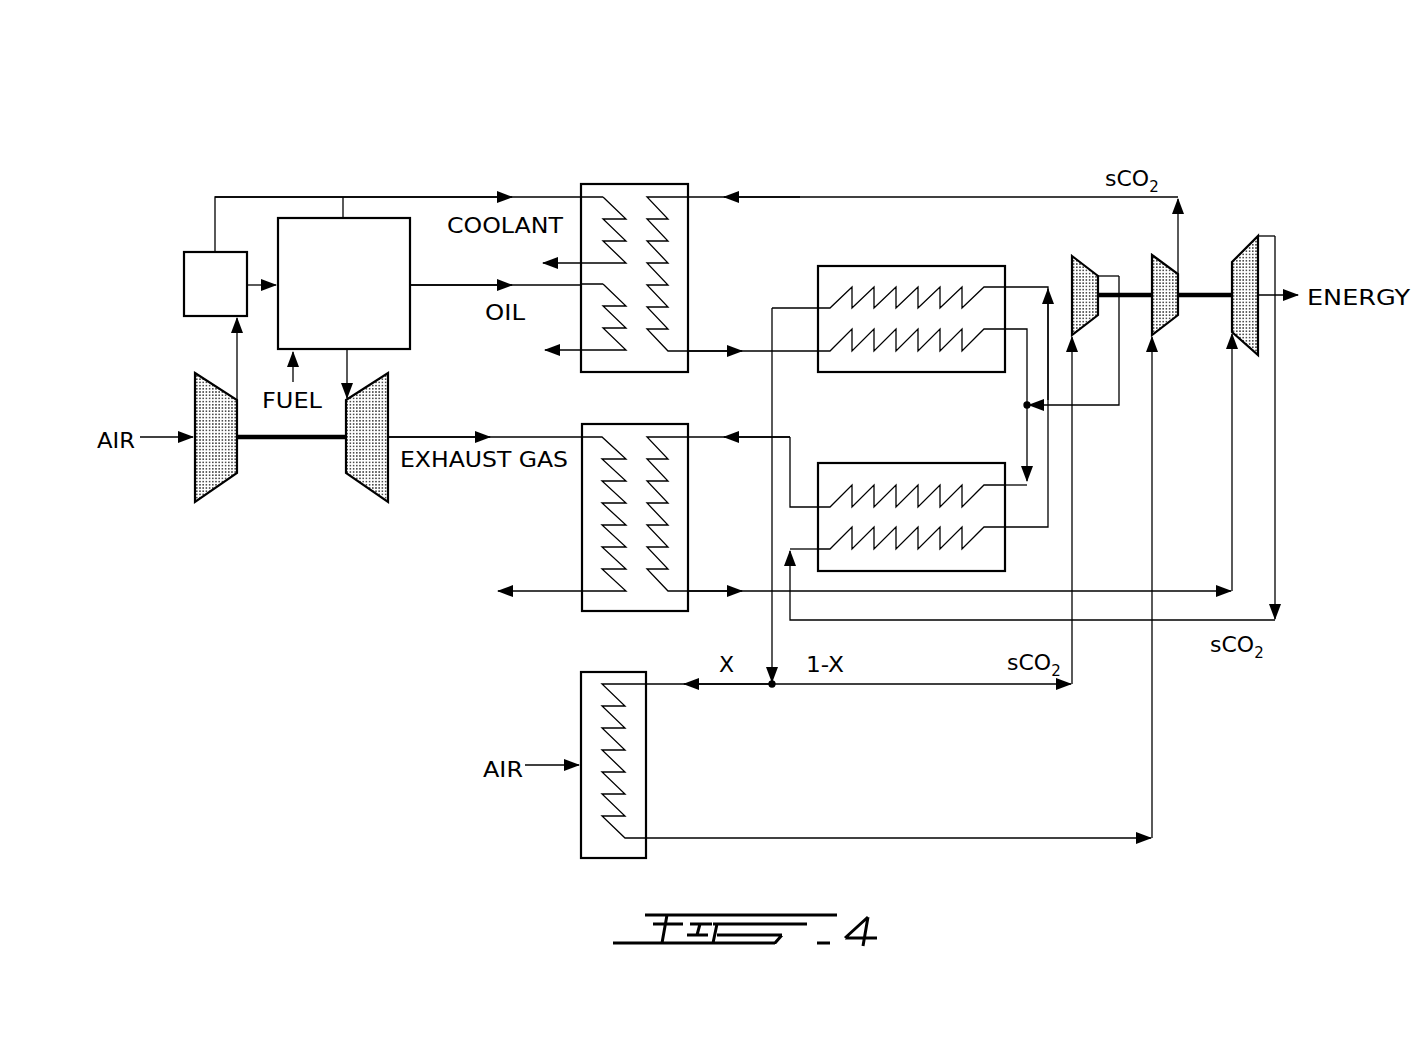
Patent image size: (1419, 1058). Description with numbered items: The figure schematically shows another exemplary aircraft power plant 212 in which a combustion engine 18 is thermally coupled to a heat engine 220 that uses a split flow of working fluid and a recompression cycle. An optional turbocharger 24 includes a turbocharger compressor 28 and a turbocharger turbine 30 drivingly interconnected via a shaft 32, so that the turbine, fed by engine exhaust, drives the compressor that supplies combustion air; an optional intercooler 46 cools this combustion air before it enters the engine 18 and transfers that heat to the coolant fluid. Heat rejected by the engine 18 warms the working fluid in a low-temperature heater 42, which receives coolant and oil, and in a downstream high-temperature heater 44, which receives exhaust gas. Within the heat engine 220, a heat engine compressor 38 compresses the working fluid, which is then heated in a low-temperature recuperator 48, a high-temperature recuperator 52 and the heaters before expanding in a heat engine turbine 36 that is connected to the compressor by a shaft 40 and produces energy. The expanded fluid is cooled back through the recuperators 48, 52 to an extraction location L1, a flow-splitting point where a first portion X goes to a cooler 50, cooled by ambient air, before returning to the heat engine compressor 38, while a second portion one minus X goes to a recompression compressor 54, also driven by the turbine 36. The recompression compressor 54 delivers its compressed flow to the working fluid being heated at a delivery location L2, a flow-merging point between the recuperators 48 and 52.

The aircraft power plant 212 is at (195, 158).
The heat engine 220 is at (918, 158).
The combustion engine 18 is at (318, 243).
The intercooler 46 is at (196, 280).
The turbocharger 24 is at (300, 545).
The turbocharger compressor 28 is at (220, 473).
The turbocharger turbine 30 is at (360, 478).
The shaft 32 is at (289, 440).
The low-temperature heater 42 is at (628, 202).
The high-temperature heater 44 is at (625, 433).
The low-temperature recuperator 48 is at (842, 273).
The high-temperature recuperator 52 is at (843, 470).
The cooler 50 is at (588, 695).
The recompression compressor 54 is at (1085, 262).
The heat engine compressor 38 is at (1168, 272).
The heat engine turbine 36 is at (1247, 257).
The shaft 40 is at (1200, 300).
The extraction location L1 is at (770, 688).
The delivery location L2 is at (1027, 405).